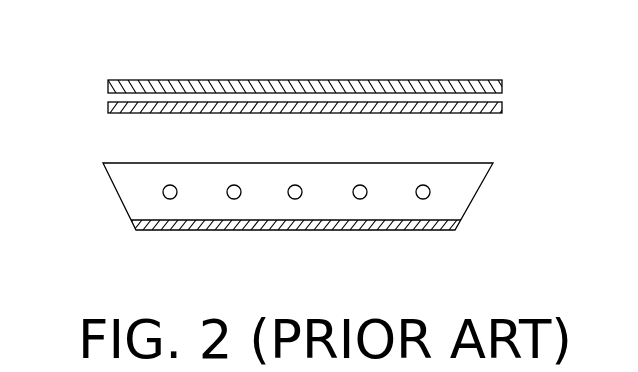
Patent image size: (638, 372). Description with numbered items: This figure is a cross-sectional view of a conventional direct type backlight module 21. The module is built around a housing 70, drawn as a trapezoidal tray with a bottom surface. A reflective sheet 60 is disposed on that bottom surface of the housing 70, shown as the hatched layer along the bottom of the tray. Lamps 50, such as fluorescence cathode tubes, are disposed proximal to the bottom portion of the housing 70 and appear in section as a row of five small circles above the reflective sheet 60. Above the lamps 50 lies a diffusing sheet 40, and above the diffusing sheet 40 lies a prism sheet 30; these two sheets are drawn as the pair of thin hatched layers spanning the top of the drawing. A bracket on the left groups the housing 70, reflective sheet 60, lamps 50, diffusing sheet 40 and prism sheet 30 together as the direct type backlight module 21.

The direct type backlight module 21 is at (94, 83).
The prism sheet 30 is at (253, 80).
The diffusing sheet 40 is at (382, 102).
The lamps 50 is at (228, 196).
The reflective sheet 60 is at (443, 231).
The housing 70 is at (478, 200).